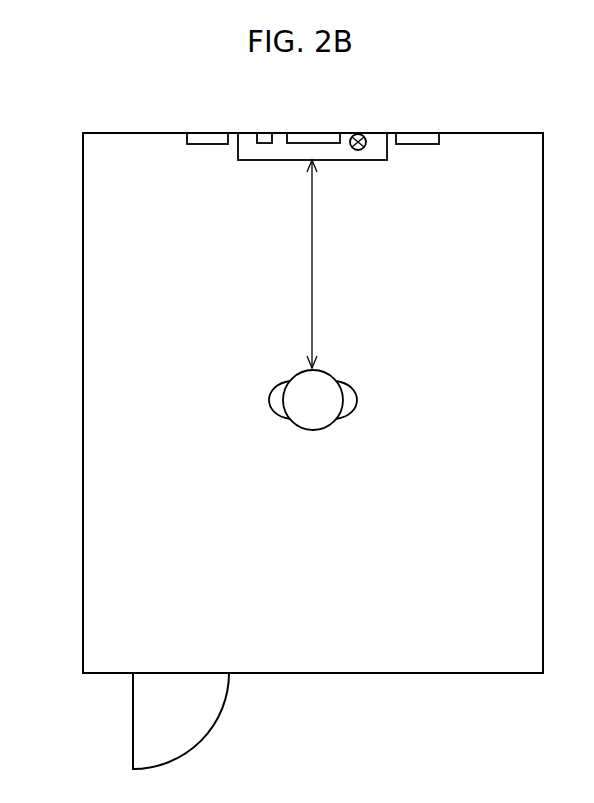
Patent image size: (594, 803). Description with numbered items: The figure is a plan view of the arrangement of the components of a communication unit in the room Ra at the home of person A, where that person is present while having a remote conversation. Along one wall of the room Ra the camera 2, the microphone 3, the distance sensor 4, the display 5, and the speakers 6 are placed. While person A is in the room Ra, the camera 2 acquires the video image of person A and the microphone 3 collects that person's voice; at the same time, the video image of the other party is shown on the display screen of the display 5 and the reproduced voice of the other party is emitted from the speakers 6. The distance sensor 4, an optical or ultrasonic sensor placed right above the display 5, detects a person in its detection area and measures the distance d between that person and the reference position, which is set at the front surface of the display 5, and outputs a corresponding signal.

The camera 2 is at (314, 132).
The microphone 3 is at (361, 134).
The distance sensor 4 is at (265, 132).
The display 5 is at (365, 161).
The speakers 6 is at (208, 146).
The room Ra is at (112, 445).
The distance d is at (320, 264).